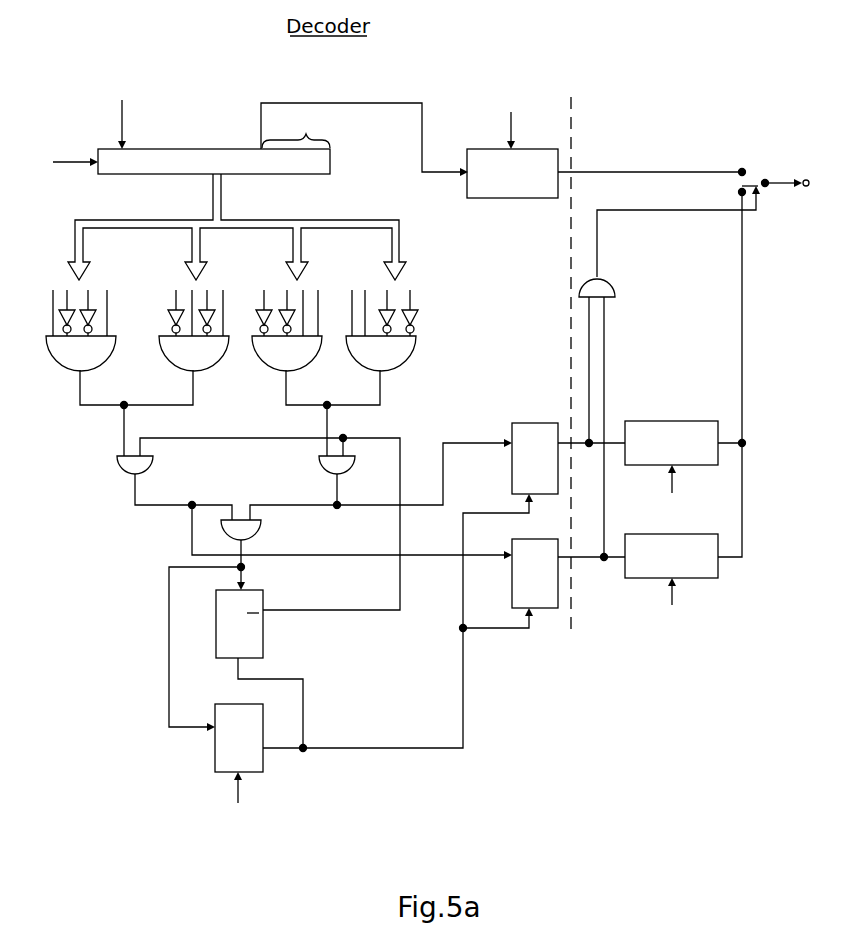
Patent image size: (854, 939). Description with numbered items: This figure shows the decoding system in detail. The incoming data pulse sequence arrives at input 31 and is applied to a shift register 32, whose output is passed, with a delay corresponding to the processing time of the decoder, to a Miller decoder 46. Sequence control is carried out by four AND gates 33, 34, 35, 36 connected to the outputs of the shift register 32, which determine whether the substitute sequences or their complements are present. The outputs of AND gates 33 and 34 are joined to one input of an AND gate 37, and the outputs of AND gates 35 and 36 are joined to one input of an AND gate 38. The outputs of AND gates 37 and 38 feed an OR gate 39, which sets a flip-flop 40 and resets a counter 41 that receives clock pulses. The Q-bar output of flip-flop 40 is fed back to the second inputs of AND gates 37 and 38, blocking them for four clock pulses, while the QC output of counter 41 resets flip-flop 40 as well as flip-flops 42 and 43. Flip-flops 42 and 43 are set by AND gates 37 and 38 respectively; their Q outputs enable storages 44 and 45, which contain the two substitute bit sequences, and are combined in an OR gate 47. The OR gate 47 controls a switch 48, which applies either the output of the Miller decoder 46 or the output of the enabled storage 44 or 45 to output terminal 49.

The data input 31 is at (61, 149).
The shift register 32 is at (237, 181).
The AND gate 33 is at (378, 334).
The AND gate 34 is at (284, 337).
The AND gate 35 is at (188, 334).
The AND gate 36 is at (70, 333).
The AND gate 37 is at (351, 466).
The AND gate 38 is at (148, 466).
The OR gate 39 is at (253, 530).
The flip-flop 40 is at (254, 624).
The counter 41 is at (235, 768).
The flip-flop 42 is at (521, 458).
The flip-flop 43 is at (521, 573).
The storage 44 is at (671, 449).
The storage 45 is at (671, 561).
The Miller decoder 46 is at (512, 156).
The OR gate 47 is at (608, 290).
The switch 48 is at (765, 191).
The output terminal 49 is at (789, 170).